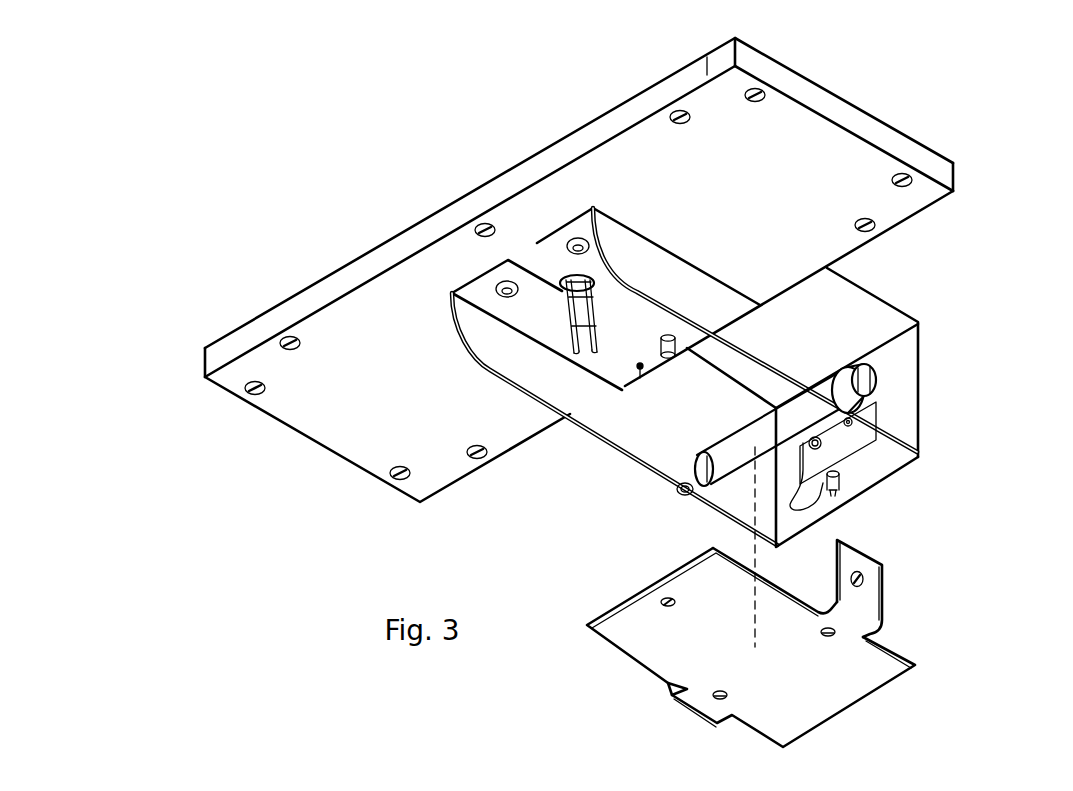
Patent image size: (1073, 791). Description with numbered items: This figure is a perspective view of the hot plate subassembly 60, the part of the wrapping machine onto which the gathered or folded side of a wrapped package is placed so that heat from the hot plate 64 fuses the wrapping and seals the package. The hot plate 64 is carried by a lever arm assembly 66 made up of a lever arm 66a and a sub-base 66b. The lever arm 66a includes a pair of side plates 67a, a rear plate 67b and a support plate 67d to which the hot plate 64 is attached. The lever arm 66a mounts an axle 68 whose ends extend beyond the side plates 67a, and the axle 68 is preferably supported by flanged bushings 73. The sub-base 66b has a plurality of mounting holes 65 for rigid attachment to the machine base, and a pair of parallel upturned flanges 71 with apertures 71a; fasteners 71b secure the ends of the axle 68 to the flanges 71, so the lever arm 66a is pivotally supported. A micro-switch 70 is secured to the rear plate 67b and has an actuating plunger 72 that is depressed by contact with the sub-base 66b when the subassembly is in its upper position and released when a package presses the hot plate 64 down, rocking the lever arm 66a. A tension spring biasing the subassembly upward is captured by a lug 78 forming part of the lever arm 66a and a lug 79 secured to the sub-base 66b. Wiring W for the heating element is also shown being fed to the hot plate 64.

The hot plate subassembly 60 is at (430, 156).
The hot plate 64 is at (830, 105).
The mounting holes 65 is at (720, 690).
The lever arm assembly 66 is at (996, 514).
The lever arm 66a is at (916, 324).
The sub-base 66b is at (777, 672).
The side plates 67a is at (832, 326).
The rear plate 67b is at (892, 460).
The support plate 67d is at (609, 332).
The axle 68 is at (733, 452).
The micro-switch 70 is at (867, 453).
The upturned flanges 71 is at (877, 606).
The apertures 71a is at (862, 577).
The fasteners 71b is at (868, 376).
The actuating plunger 72 is at (831, 498).
The flanged bushings 73 is at (868, 405).
The lug 78 is at (672, 358).
The lug 79 is at (660, 600).
The wiring W is at (556, 313).